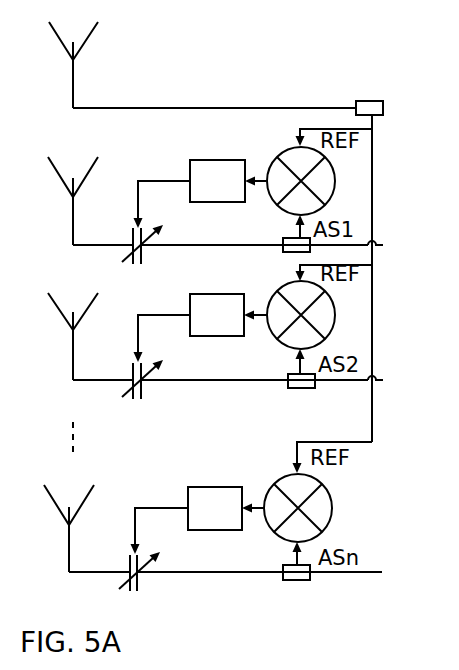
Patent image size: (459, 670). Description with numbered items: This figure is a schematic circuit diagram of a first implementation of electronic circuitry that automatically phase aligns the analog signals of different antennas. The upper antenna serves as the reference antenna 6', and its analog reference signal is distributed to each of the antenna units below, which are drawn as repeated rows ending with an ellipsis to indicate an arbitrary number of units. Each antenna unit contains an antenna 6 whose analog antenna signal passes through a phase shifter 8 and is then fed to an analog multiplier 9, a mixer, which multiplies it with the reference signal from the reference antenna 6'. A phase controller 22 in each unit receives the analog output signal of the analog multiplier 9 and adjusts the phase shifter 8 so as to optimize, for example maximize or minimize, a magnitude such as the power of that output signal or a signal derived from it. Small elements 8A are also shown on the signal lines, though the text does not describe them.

The reference antenna 6' is at (58, 65).
The antenna 6 is at (58, 364).
The phase shifter 8 is at (143, 256).
The switch 8A is at (366, 102).
The analog multiplier 9 is at (285, 150).
The phase controller 22 is at (216, 345).